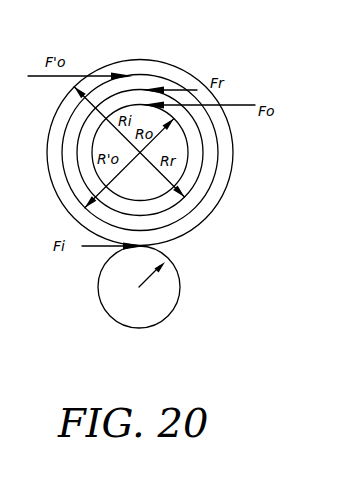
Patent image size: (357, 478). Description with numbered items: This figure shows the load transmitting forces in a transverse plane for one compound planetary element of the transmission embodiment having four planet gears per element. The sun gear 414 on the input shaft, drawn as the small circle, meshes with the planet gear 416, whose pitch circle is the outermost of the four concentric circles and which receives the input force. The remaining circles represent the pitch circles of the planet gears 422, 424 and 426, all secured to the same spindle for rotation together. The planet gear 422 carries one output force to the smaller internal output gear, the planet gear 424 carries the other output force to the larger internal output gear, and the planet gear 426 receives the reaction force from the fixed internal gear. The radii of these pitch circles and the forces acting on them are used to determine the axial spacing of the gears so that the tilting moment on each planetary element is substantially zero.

The planet gear 416 is at (189, 73).
The planet gear 424 is at (218, 146).
The planet gear 426 is at (198, 180).
The planet gear 422 is at (172, 201).
The sun gear 414 is at (166, 316).